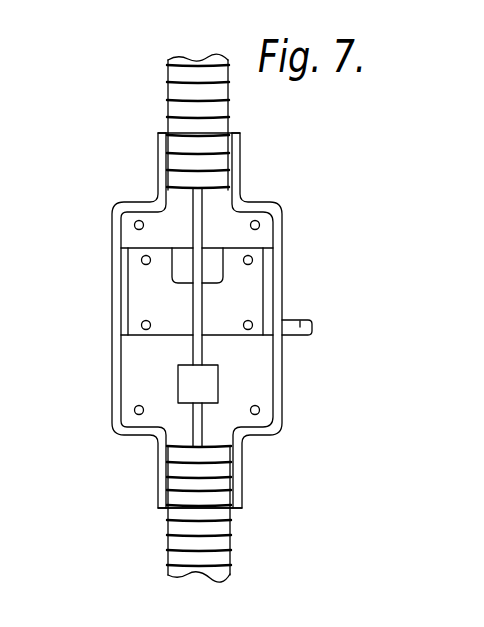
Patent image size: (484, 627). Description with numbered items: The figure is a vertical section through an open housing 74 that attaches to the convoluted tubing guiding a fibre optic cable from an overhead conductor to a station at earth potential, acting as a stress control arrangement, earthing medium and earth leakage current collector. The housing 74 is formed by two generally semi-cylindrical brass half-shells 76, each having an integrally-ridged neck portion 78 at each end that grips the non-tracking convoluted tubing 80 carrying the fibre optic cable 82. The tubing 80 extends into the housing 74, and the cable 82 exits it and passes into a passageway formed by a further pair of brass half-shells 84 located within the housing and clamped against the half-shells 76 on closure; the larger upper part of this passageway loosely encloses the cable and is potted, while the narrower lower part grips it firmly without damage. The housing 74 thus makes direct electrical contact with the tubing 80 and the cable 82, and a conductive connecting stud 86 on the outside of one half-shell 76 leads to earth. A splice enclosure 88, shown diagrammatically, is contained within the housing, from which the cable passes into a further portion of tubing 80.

The housing 74 is at (106, 236).
The half-shells 76 is at (278, 227).
The neck portion 78 is at (220, 158).
The convoluted tubing 80 is at (186, 86).
The fibre optic cable 82 is at (197, 205).
The half-shells 84 is at (165, 322).
The conductive connecting stud 86 is at (297, 336).
The splice enclosure 88 is at (190, 380).